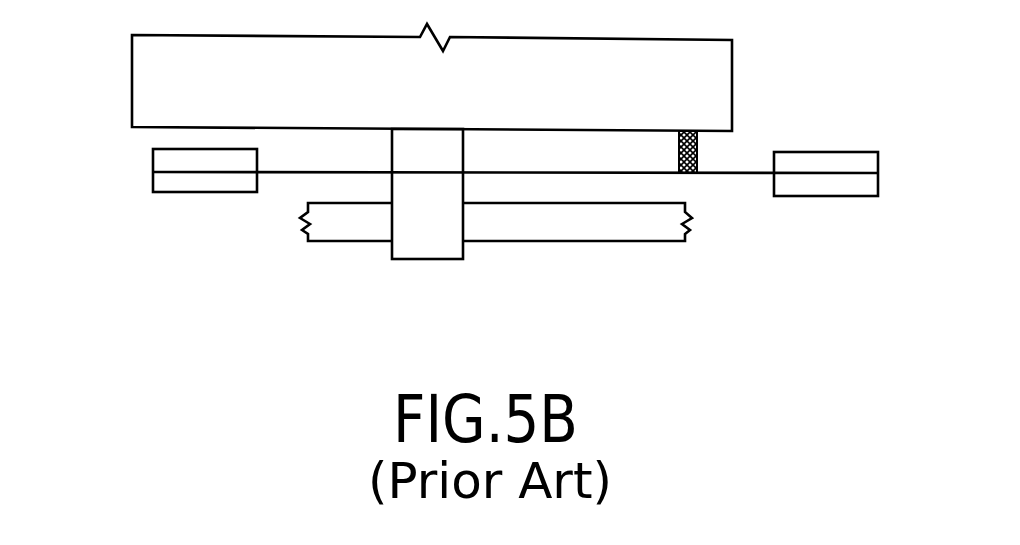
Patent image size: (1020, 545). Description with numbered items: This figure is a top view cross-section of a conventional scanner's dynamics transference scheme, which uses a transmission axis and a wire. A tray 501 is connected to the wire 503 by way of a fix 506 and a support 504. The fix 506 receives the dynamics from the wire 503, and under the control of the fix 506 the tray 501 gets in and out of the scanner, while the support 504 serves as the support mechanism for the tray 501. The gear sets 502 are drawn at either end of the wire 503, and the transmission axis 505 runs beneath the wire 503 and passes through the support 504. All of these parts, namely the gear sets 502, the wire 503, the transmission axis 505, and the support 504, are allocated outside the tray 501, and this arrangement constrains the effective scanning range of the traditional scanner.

The tray 501 is at (156, 85).
The gear sets 502 is at (172, 183).
The wire 503 is at (733, 176).
The support 504 is at (433, 253).
The transmission axis 505 is at (586, 228).
The fix 506 is at (697, 152).